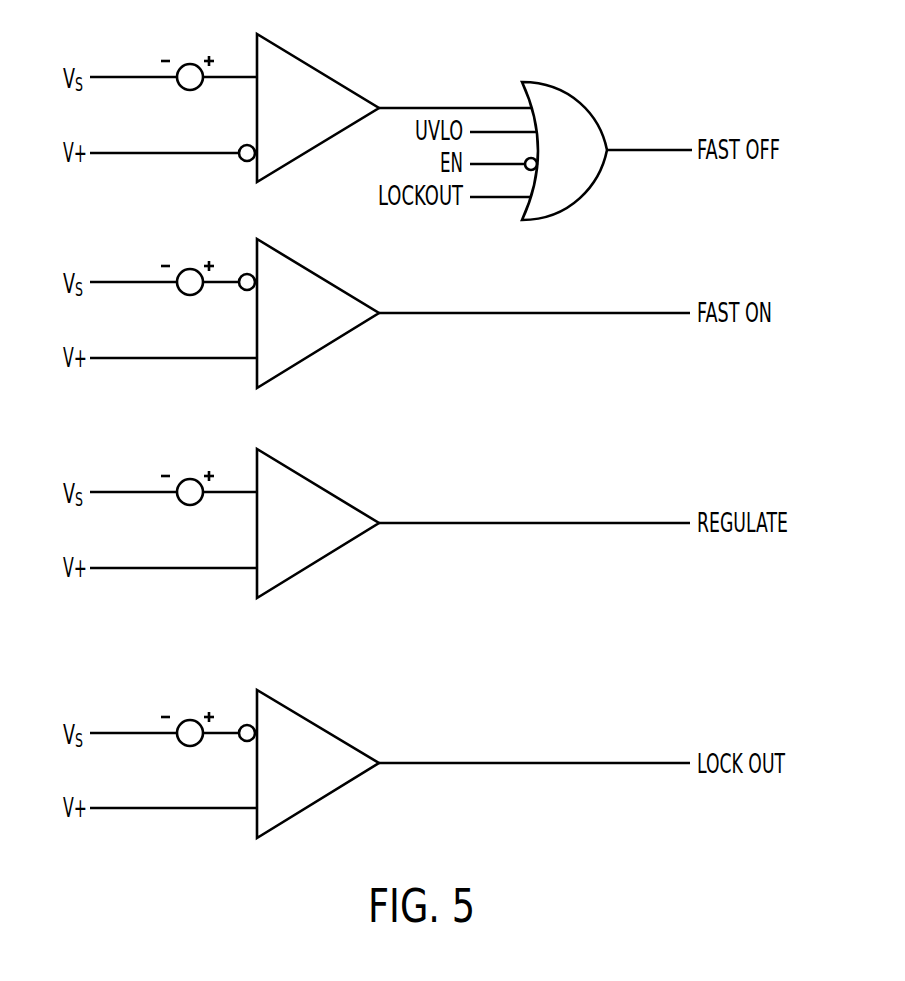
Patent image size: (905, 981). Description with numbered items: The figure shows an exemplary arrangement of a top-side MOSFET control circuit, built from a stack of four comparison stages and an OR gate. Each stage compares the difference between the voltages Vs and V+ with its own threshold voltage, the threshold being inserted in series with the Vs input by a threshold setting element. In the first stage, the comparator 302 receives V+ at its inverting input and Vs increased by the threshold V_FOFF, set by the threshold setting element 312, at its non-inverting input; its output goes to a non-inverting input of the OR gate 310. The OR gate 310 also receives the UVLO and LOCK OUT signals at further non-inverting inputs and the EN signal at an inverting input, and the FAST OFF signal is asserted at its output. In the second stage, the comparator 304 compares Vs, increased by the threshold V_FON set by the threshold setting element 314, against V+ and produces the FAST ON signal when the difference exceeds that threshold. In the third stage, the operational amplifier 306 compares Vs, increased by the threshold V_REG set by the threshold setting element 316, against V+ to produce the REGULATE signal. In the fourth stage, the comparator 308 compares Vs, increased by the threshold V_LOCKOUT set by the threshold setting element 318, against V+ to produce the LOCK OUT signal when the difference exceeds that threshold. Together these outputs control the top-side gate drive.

The comparator 302 is at (310, 66).
The comparator 304 is at (312, 272).
The operational amplifier 306 is at (312, 482).
The comparator 308 is at (312, 722).
The OR gate 310 is at (595, 109).
The threshold setting element 312 is at (190, 90).
The threshold setting element 314 is at (190, 295).
The threshold setting element 316 is at (190, 505).
The threshold setting element 318 is at (190, 746).